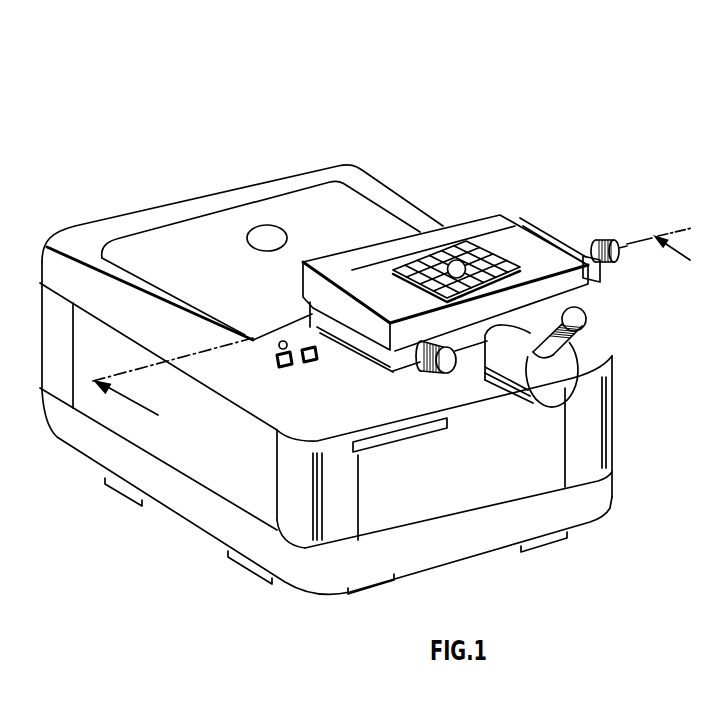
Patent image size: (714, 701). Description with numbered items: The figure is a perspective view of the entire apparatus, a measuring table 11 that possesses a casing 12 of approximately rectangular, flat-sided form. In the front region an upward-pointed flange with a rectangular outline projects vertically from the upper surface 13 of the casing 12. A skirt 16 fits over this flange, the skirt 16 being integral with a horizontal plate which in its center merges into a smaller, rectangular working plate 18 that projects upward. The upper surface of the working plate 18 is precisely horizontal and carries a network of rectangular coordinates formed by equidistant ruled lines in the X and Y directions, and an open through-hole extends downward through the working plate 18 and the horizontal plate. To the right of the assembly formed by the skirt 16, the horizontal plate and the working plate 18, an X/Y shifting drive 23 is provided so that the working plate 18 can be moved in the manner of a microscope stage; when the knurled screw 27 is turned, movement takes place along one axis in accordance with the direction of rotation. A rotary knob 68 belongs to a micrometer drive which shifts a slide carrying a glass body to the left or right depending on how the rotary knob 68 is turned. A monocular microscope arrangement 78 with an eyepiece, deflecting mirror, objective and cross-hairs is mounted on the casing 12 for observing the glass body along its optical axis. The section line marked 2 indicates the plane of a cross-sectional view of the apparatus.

The measuring table 11 is at (466, 61).
The casing 12 is at (225, 548).
The upper surface 13 is at (240, 291).
The skirt 16 is at (302, 293).
The working plate 18 is at (462, 250).
The X/Y shifting drive 23 is at (614, 224).
The knurled screw 27 is at (608, 242).
The section line 2- 2 is at (389, 311).
The rotary knob 68 is at (448, 362).
The monocular microscope arrangement 78 is at (590, 344).